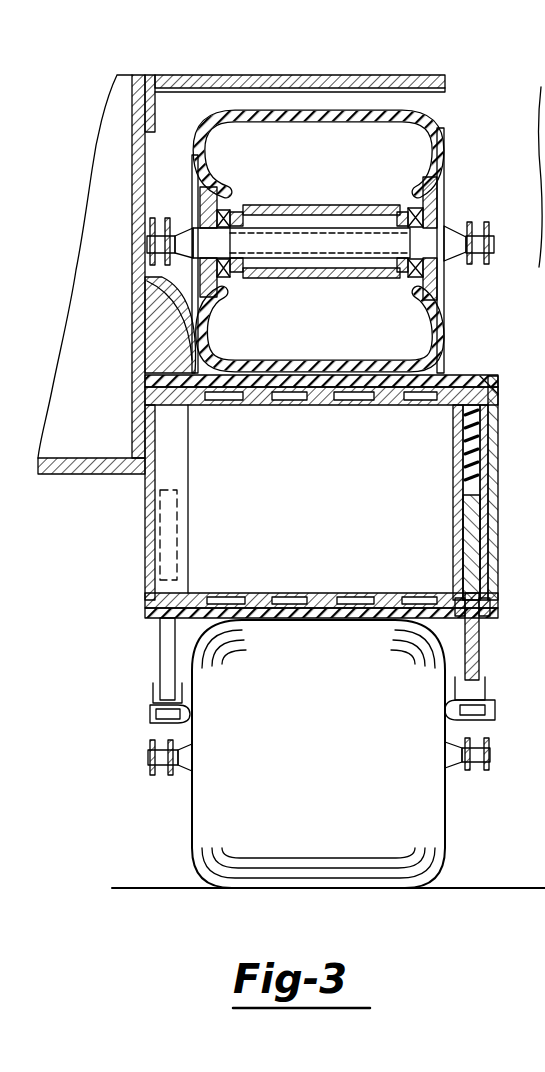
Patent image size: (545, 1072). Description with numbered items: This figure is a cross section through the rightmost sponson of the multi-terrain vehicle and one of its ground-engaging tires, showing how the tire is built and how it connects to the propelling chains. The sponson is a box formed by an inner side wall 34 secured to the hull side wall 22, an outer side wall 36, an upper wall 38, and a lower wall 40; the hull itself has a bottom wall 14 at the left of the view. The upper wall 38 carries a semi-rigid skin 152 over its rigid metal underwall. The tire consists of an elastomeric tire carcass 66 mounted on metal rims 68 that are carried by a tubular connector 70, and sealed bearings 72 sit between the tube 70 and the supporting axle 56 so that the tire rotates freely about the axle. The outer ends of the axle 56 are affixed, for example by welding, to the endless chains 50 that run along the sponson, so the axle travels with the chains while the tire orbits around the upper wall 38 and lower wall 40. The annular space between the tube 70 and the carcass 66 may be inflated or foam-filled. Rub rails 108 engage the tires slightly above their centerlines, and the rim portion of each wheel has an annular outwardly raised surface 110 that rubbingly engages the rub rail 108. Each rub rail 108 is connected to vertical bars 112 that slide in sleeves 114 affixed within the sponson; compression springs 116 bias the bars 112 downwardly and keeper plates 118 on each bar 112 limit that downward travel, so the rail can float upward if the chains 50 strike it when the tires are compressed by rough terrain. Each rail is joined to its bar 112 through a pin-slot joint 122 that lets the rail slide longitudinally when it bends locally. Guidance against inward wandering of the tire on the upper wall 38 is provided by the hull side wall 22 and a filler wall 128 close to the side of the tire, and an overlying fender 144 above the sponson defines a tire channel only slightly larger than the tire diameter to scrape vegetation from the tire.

The bottom wall 14 is at (76, 477).
The hull side wall 22 is at (132, 152).
The inner side wall 34 is at (145, 532).
The outer side wall 36 is at (498, 482).
The upper wall 38 is at (458, 366).
The lower wall 40 is at (318, 612).
The endless chains 50 is at (148, 213).
The axle 56 is at (312, 230).
The tire carcass 66 is at (436, 128).
The metal rims 68 is at (200, 205).
The tubular connector 70 is at (268, 206).
The sealed bearings 72 is at (233, 210).
The rub rail 108 is at (150, 718).
The annular outwardly raised surface 110 is at (441, 195).
The vertical bars 112 is at (160, 645).
The sleeves 114 is at (455, 530).
The compression springs 116 is at (463, 458).
The keeper plates 118 is at (485, 603).
The pin-slot joint 122 is at (455, 690).
The filler wall 128 is at (155, 352).
The fender 144 is at (285, 75).
The semi-rigid skin 152 is at (498, 376).